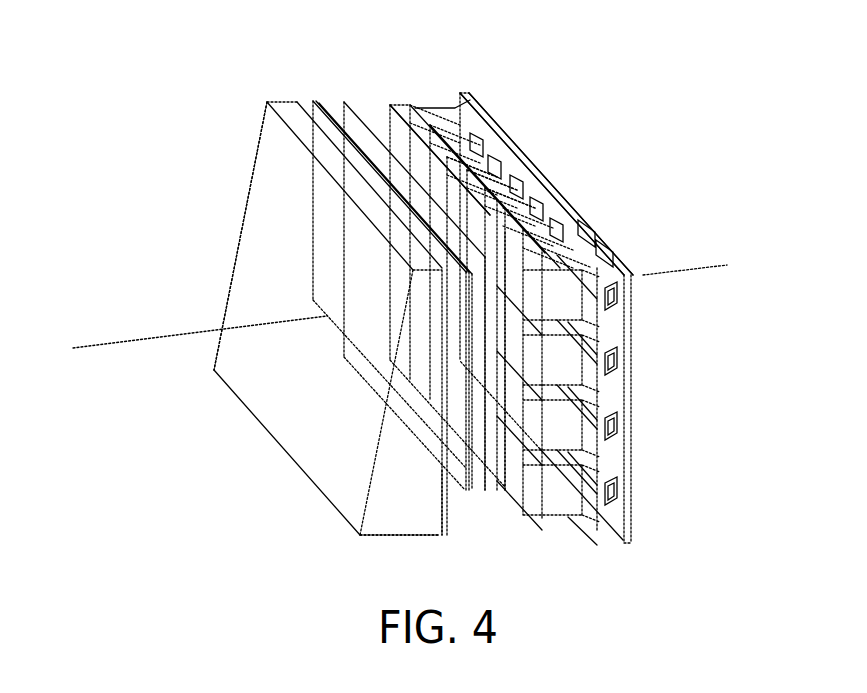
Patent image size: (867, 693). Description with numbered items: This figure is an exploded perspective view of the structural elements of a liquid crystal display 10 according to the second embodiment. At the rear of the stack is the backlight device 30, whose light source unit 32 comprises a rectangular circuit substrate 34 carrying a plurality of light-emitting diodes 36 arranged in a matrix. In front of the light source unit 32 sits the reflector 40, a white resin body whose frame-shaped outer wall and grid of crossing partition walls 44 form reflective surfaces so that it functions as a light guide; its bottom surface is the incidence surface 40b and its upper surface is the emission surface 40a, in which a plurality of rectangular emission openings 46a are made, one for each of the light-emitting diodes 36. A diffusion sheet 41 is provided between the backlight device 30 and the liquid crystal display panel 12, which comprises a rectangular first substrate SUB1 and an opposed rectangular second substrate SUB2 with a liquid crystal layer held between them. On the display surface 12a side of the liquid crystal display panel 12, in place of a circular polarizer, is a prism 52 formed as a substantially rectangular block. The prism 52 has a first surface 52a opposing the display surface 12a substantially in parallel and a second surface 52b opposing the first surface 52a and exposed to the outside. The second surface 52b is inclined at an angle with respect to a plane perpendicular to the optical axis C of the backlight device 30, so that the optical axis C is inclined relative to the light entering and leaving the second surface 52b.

The liquid crystal display 10 is at (194, 78).
The liquid crystal display panel 12 is at (447, 492).
The display surface 12a is at (357, 155).
The backlight device 30 is at (457, 84).
The light source unit 32 is at (628, 256).
The circuit substrate 34 is at (588, 250).
The light-emitting diodes 36 is at (537, 200).
The reflector 40 is at (422, 106).
The emission surface 40a is at (530, 492).
The incidence surface 40b is at (600, 340).
The diffusion sheet 41 is at (480, 492).
The partition walls 44 is at (455, 110).
The emission openings 46a is at (563, 220).
The prism 52 is at (330, 516).
The first surface 52a is at (433, 517).
The second surface 52b is at (238, 289).
The first substrate SUB1 is at (343, 100).
The second substrate SUB2 is at (313, 100).
The optical axis C is at (135, 348).